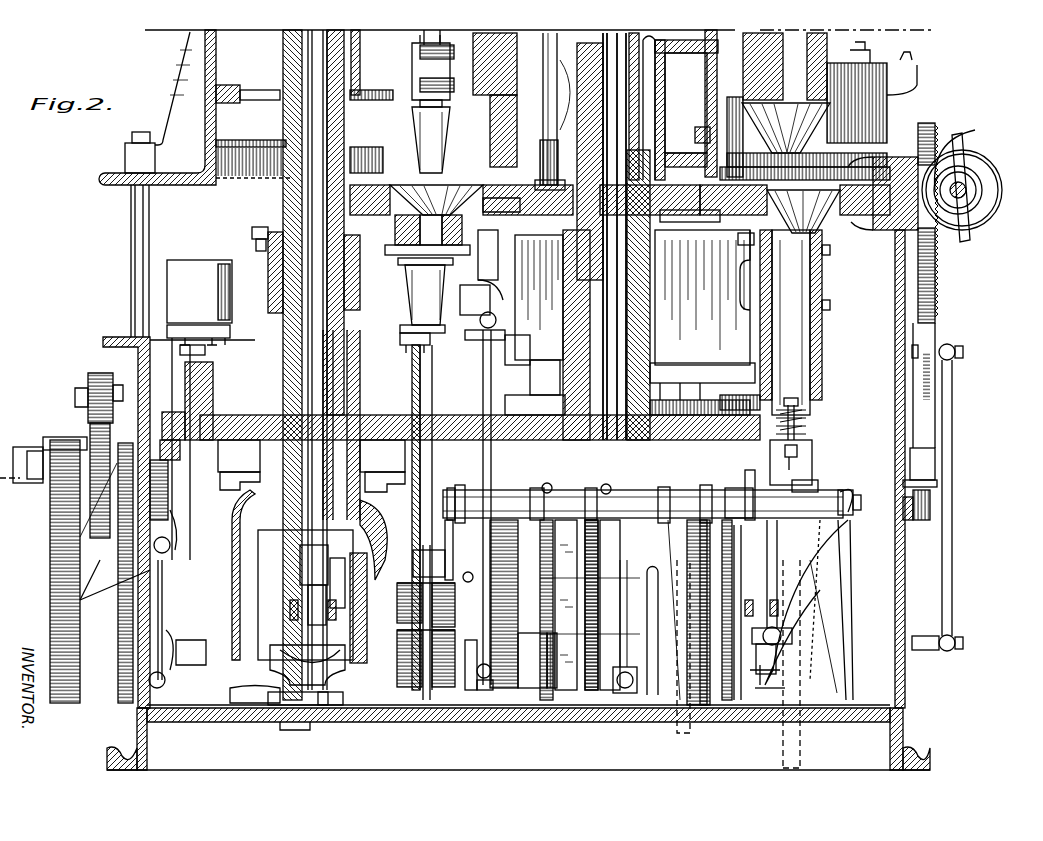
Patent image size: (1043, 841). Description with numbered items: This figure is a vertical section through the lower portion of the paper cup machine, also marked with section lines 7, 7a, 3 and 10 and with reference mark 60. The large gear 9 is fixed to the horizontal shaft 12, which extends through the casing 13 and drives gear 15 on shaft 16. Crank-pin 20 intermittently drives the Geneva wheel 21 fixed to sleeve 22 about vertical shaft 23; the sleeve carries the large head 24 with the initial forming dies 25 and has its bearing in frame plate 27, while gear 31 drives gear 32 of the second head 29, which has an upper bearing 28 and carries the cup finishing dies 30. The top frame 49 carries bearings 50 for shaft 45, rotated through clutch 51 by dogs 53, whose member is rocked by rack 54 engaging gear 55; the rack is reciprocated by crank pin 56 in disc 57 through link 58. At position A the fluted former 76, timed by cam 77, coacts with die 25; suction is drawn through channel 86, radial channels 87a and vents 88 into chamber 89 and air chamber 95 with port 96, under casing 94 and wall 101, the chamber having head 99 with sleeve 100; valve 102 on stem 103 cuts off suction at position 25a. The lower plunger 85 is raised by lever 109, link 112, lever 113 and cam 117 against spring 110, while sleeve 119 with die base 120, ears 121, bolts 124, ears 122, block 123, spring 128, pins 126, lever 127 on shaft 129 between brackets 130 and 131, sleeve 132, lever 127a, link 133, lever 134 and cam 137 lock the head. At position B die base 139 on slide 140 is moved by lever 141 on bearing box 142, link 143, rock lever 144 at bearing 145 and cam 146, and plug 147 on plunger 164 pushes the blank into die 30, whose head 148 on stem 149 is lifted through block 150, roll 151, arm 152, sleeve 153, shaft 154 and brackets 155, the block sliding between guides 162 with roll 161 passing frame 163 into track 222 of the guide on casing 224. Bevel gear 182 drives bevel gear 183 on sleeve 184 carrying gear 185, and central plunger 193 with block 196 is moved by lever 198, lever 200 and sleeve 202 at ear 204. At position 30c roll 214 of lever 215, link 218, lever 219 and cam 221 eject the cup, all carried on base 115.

The plunger 164 is at (424, 40).
The head 99 is at (588, 40).
The sleeve 100 is at (650, 38).
The transverse wall 101 is at (690, 40).
The gear 185 is at (250, 90).
The port 96 is at (665, 90).
The shaft 10 is at (533, 106).
The tapered plug 147 is at (422, 133).
The air chamber 95 is at (665, 128).
The bolt 60 is at (695, 132).
The casing 94 is at (662, 147).
The stem 103 is at (540, 160).
The position B is at (525, 152).
The discharge position of die 25a is at (445, 188).
The fluted conical former 76 is at (807, 138).
The initial forming die 25 is at (795, 200).
The position A is at (870, 200).
The top frame 49 is at (970, 125).
The dogs 53 is at (960, 150).
The clutch 51 is at (998, 165).
The horizontal shaft 45 is at (982, 186).
The gear 55 is at (985, 220).
The bearings 50 is at (960, 238).
The large head 24 is at (936, 255).
The section line 7— 7 is at (266, 190).
The section line 7ª—7ª 7a is at (476, 218).
The chamber 89 is at (690, 215).
The frame plate 27 is at (252, 233).
The ejecting position of die 30c is at (183, 266).
The die base 139 is at (400, 255).
The slide 140 is at (484, 270).
The vertical reciprocating valve 102 is at (542, 297).
The radial channels 87a is at (534, 280).
The channel 86 is at (738, 235).
The vertical vents 88 is at (695, 280).
The sleeve 22 is at (690, 302).
The lower plunger 85 is at (824, 270).
The die base 120 is at (842, 277).
The upper bearing 28 is at (270, 283).
The cup finishing die 30 is at (400, 315).
The head 148 is at (410, 348).
The lever 141 is at (478, 340).
The bearing box 142 is at (515, 355).
The crank-pin 20 is at (532, 378).
The vertical shaft 23 is at (640, 358).
The Geneva wheel 21 is at (715, 380).
The sleeve 119 is at (805, 342).
The ears 121 is at (794, 408).
The spring 128 is at (800, 408).
The bolts 124 is at (808, 425).
The slidable block 123 is at (813, 455).
The lever 127 is at (810, 485).
The pins 126 is at (838, 490).
The shaft 129 is at (853, 504).
The casing 13 is at (138, 362).
The central vertical sleeve 184 is at (295, 360).
The central plunger 193 is at (312, 405).
The second intermittently rotating head 29 is at (345, 382).
The reciprocatable stem 149 is at (420, 405).
The guides 162 is at (408, 460).
The gear 32 is at (170, 470).
The cam 221 is at (168, 478).
The frame 163 is at (239, 465).
The sleeve 153 is at (473, 481).
The link 143 is at (490, 478).
The bracket 131 is at (547, 485).
The lever 127a is at (606, 485).
The sleeve 132 is at (650, 492).
The cam 77 is at (705, 492).
The shaft 154 is at (733, 500).
The ears 122 is at (748, 495).
The gear 31 is at (718, 440).
The section line 3— 3 is at (973, 495).
The lever 215 is at (178, 525).
The track 222 is at (400, 530).
The arm 152 is at (452, 535).
The horizontal shaft 12 is at (50, 573).
The reciprocating rack 54 is at (937, 304).
The link 58 is at (952, 418).
The disc 57 is at (905, 535).
The link 133 is at (650, 556).
The cam 117 is at (742, 575).
The shaft 16 is at (340, 595).
The spring 110 is at (770, 628).
The lever 109 is at (855, 600).
The bracket 130 is at (848, 632).
The link 112 is at (780, 669).
The lever 113 is at (787, 689).
The roll 214 is at (195, 560).
The lever 219 is at (176, 650).
The bevel gear 183 is at (305, 595).
The roll 161 is at (172, 565).
The lever 198 is at (310, 625).
The block 196 is at (307, 662).
The bevel gear 182 is at (367, 640).
The roll 151 is at (426, 618).
The block 150 is at (448, 635).
The large gear 9 is at (50, 626).
The link 218 is at (160, 630).
The casing 224 is at (235, 708).
The lever 200 is at (280, 705).
The ear 204 is at (290, 730).
The sleeve 202 is at (340, 712).
The bearing 145 is at (428, 690).
The rock lever 144 is at (470, 680).
The cam 146 is at (484, 692).
The gear 15 is at (508, 690).
The cam 137 is at (590, 680).
The lever 134 is at (615, 695).
The brackets 155 is at (717, 644).
The crank pin 56 is at (928, 652).
The base 115 is at (903, 740).